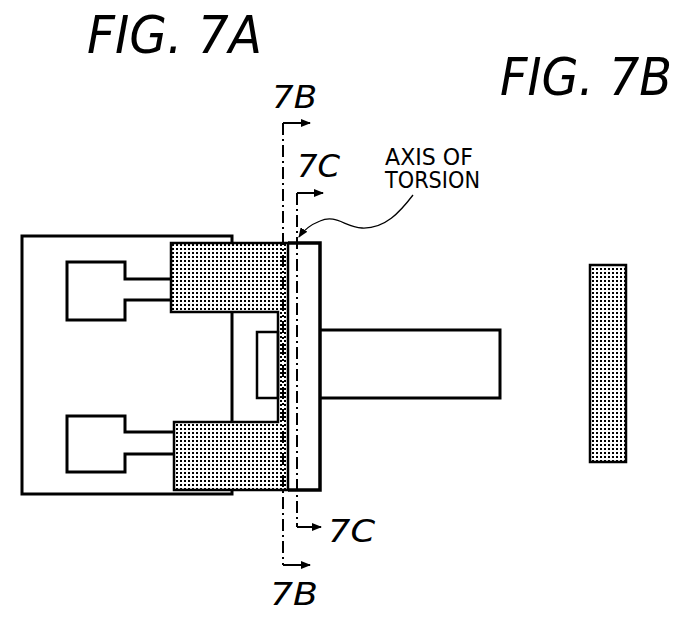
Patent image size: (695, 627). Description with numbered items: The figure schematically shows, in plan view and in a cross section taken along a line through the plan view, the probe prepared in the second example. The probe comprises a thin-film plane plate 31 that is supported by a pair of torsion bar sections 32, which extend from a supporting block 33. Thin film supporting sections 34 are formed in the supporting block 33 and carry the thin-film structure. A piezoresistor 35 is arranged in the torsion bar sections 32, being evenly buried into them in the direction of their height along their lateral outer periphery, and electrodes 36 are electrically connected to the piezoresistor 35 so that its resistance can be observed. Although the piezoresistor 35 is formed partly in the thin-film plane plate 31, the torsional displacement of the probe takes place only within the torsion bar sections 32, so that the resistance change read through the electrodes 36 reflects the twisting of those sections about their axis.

In FIG. 7A, the thin-film plane plate 31 is at (442, 330).
In FIG. 7A, the torsion bar sections 32 is at (308, 327).
In FIG. 7A, the supporting block 33 is at (44, 488).
In FIG. 7A, the thin film supporting sections 34 is at (250, 300).
In FIG. 7B, the piezoresistor 35 is at (598, 405).
In FIG. 7A, the electrodes 36 is at (105, 416).